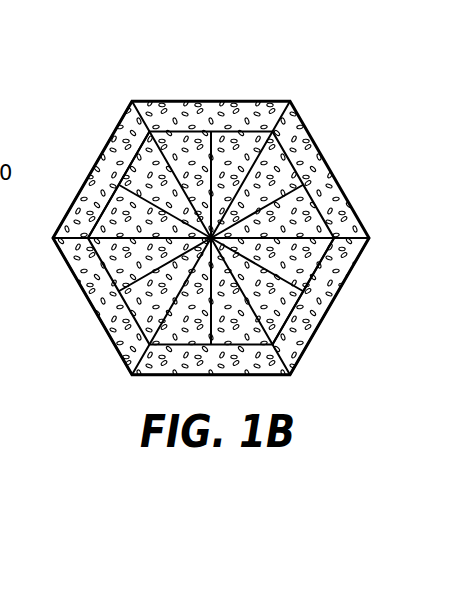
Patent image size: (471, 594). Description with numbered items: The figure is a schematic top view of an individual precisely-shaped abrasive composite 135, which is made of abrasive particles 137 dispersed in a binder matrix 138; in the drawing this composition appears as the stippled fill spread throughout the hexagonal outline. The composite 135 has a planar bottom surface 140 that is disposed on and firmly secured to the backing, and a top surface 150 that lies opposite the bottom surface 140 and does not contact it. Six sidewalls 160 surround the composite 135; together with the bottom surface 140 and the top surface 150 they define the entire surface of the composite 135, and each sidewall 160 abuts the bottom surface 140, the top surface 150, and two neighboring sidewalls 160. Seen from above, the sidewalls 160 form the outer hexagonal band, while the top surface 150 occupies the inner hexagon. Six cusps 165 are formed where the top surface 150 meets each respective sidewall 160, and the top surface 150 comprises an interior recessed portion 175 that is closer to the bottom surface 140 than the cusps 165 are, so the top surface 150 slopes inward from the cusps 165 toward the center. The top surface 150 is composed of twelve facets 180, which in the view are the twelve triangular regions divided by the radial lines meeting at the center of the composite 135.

The precisely-shaped abrasive composite 135 is at (294, 89).
The top surface 150 is at (177, 140).
The abrasive particles 137 is at (122, 160).
The cusps 165 is at (124, 195).
The interior recessed portion 175 is at (247, 218).
The binder matrix 138 is at (72, 258).
The sidewalls 160 is at (352, 274).
The facets 180 is at (293, 312).
The bottom surface 140 is at (273, 379).